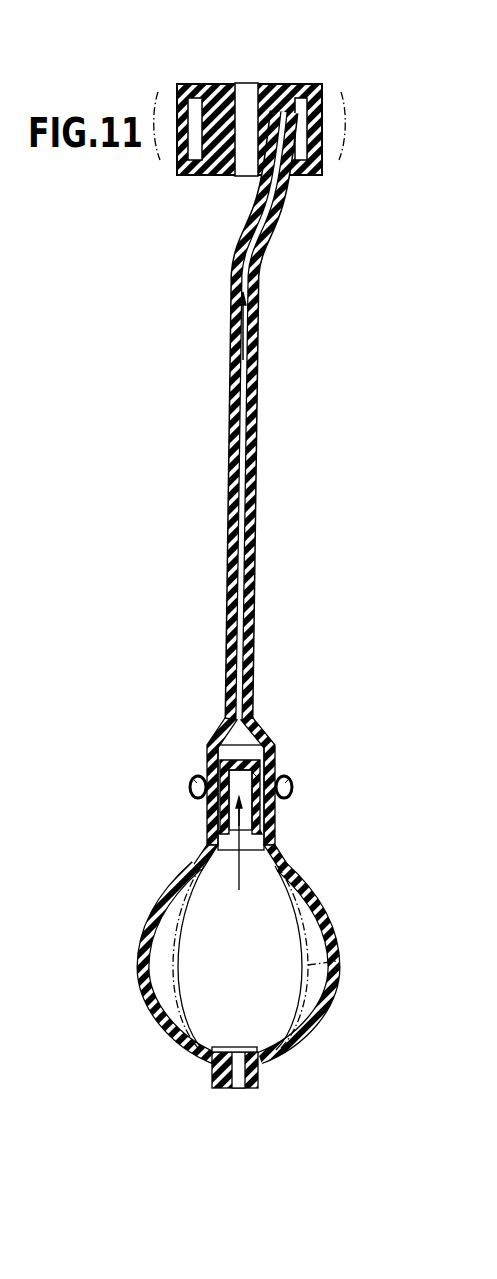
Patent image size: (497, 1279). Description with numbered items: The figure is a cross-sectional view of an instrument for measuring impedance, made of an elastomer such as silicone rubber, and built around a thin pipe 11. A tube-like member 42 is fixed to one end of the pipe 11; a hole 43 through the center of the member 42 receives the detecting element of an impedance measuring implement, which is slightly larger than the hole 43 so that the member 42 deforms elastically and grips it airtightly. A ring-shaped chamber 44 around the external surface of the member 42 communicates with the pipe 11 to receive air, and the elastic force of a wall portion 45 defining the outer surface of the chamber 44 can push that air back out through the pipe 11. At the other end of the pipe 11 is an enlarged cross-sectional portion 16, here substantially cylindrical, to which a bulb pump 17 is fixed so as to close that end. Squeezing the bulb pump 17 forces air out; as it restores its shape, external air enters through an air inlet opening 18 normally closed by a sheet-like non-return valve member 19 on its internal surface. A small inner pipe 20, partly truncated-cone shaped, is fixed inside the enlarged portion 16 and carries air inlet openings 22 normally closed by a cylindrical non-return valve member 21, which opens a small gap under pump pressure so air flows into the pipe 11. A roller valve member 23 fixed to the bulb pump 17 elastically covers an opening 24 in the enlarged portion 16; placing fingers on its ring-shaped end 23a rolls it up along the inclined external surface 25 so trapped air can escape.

The pipe 11 is at (254, 453).
The enlarged cross-sectional portion 16 is at (262, 772).
The bulb pump 17 is at (338, 934).
The air inlet opening 18 is at (233, 1080).
The non-return valve member 19 is at (232, 1049).
The inner pipe 20 is at (255, 777).
The non-return valve member 21 is at (234, 758).
The air inlet openings 22 is at (259, 743).
The roller valve member 23 is at (207, 805).
The ring-shaped end 23a is at (301, 800).
The opening 24 is at (203, 823).
The inclined external surface 25 is at (276, 830).
The tube-like member 42 is at (282, 84).
The hole 43 is at (250, 96).
The ring-shaped chamber 44 is at (196, 100).
The wall portion 45 is at (170, 104).